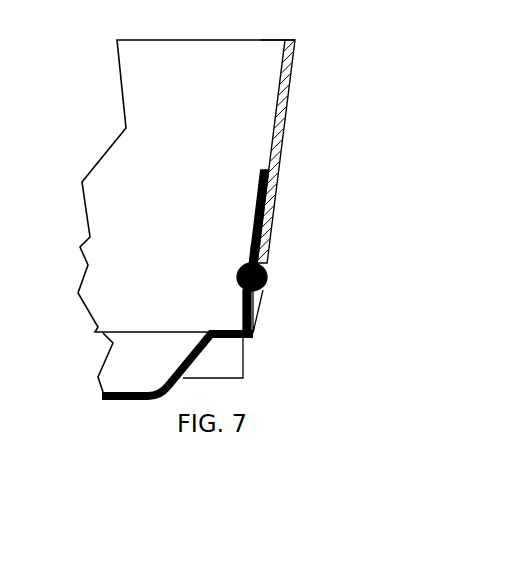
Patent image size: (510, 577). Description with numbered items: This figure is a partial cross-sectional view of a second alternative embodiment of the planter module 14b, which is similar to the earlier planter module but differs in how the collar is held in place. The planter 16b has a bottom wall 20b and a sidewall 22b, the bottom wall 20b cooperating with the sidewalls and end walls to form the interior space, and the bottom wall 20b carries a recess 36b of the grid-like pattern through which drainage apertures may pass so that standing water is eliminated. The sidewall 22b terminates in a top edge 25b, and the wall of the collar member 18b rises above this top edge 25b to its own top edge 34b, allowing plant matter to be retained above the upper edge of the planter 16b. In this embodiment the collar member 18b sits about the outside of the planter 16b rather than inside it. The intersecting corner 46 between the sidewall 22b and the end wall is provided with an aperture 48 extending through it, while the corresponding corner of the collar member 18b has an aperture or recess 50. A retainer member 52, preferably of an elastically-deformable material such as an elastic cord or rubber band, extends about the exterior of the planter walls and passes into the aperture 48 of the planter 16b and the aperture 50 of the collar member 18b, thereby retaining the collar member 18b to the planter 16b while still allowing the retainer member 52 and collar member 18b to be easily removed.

The planter module 14b is at (90, 65).
The planter 16b is at (258, 300).
The collar member 18b is at (290, 99).
The bottom wall 20b is at (212, 332).
The sidewall 22b is at (272, 218).
The top edge 25b is at (265, 172).
The top edge 34b is at (295, 55).
The recess 36b is at (128, 392).
The intersecting corner 46 is at (273, 38).
The aperture 48 is at (247, 263).
The aperture 50 is at (263, 265).
The retainer member 52 is at (270, 273).